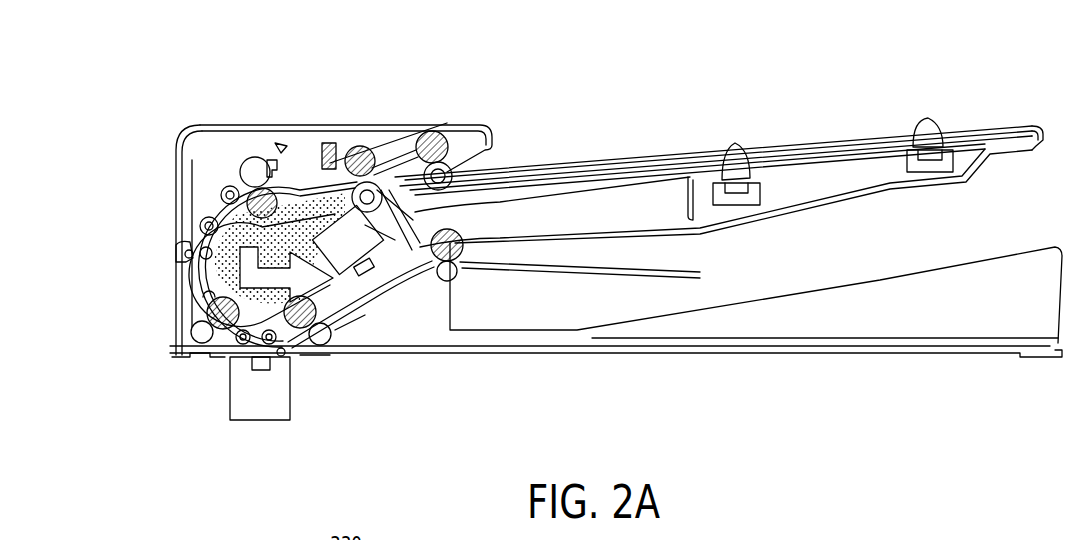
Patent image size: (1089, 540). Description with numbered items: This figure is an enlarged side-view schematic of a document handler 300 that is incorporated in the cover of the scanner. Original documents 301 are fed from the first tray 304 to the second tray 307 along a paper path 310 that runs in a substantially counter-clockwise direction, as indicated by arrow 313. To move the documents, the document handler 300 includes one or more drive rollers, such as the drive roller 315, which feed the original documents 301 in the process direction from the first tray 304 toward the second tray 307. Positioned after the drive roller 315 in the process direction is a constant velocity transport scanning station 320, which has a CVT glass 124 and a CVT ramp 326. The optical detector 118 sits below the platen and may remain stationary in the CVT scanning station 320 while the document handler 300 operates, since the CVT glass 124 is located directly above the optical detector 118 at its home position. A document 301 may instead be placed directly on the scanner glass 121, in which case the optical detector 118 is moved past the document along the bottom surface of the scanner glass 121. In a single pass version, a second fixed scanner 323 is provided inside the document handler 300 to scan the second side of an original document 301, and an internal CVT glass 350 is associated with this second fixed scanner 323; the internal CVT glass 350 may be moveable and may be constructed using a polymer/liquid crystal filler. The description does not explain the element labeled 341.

The document handler 300 is at (147, 152).
The paper path 310 is at (233, 190).
The arrow indicating process direction 313 is at (305, 165).
The drive roller 315 is at (352, 146).
The original documents 301 is at (653, 153).
The first tray 304 is at (980, 133).
The second tray 307 is at (930, 270).
The second fixed scanner 323 is at (462, 275).
The internal CVT glass 350 is at (366, 291).
The CVT scanning station 320 is at (348, 364).
The CVT ramp 326 is at (284, 358).
The scanner glass 121 is at (683, 358).
The CVT glass 124 is at (223, 358).
The optical detector 118 is at (261, 421).
The guide 341 is at (395, 530).